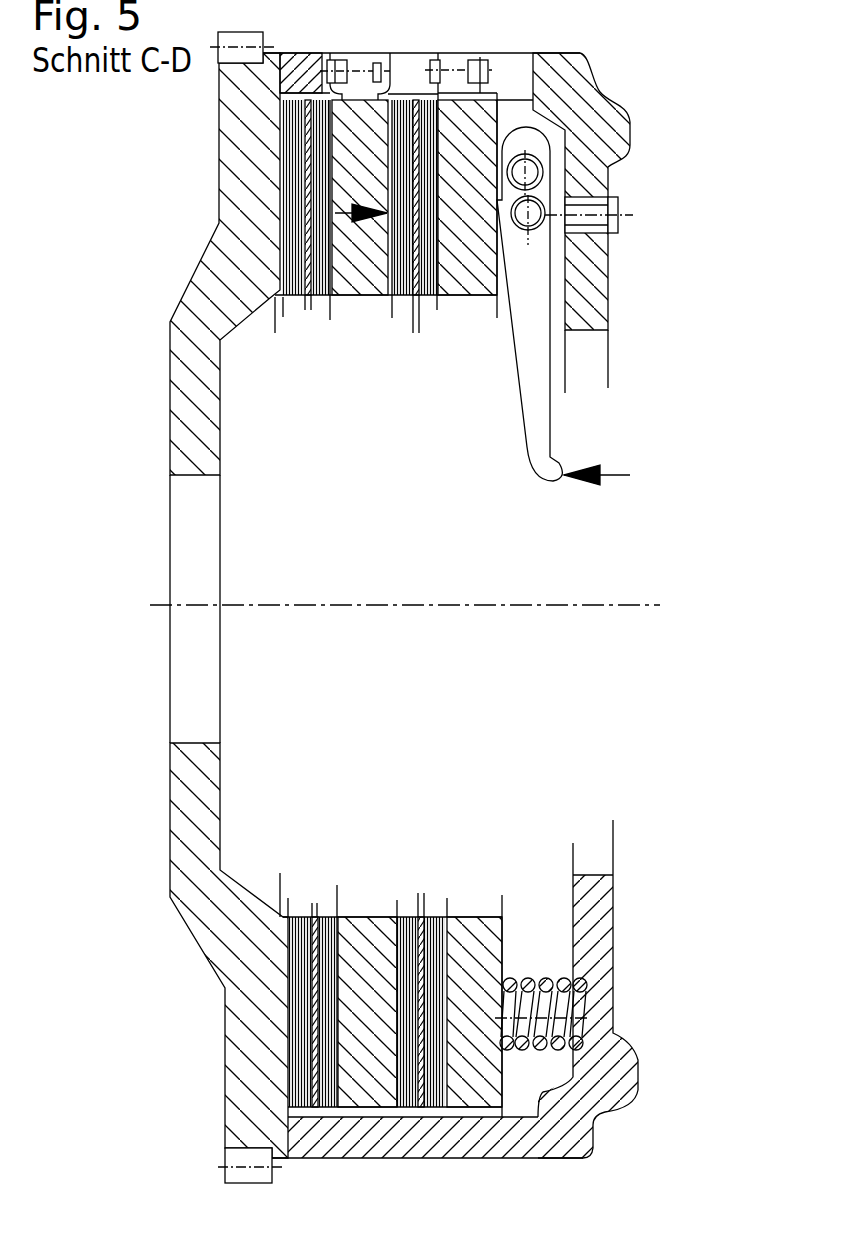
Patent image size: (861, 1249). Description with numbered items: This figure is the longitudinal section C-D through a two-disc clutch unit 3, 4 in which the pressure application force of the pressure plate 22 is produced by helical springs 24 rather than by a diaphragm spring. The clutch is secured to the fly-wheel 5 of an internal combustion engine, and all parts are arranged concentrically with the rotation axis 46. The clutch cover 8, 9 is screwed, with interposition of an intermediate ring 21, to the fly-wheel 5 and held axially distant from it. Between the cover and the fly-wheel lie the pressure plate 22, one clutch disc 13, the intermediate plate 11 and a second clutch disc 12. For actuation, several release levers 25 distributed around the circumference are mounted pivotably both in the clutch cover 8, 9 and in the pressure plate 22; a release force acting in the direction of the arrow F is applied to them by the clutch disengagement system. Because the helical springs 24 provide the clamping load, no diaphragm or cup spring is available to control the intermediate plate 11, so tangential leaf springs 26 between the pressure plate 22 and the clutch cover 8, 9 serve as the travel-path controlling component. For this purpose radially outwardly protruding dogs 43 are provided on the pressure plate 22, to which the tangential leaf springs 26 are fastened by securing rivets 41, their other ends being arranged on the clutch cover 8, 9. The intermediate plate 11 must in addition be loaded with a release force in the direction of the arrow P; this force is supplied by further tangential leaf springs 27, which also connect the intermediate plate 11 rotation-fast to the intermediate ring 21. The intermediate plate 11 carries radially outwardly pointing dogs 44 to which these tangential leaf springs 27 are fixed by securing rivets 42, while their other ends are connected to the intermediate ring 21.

The clutch unit 3 is at (639, 590).
The clutch unit 4 is at (639, 590).
The fly-wheel 5 is at (212, 282).
The clutch cover 8 is at (639, 191).
The clutch cover 9 is at (615, 140).
The intermediate plate 11 is at (350, 158).
The clutch disc 12 is at (305, 300).
The clutch disc 13 is at (418, 323).
The intermediate ring 21 is at (352, 1148).
The pressure plate 22 is at (478, 950).
The helical springs 24 is at (583, 1040).
The release levers 25 is at (540, 415).
The tangential leaf springs 26 is at (540, 50).
The tangential leaf springs 27 is at (335, 53).
The securing rivets 41 is at (434, 60).
The securing rivets 42 is at (381, 62).
The dogs 43 is at (468, 56).
The dogs 44 is at (358, 53).
The rotation axis 46 is at (550, 600).
The arrow P is at (345, 225).
The arrow F is at (617, 475).